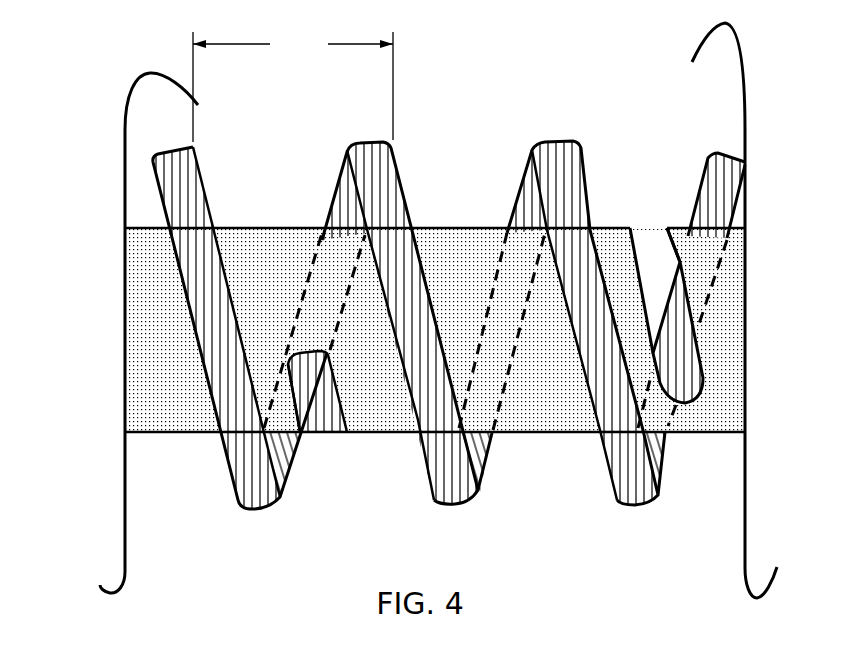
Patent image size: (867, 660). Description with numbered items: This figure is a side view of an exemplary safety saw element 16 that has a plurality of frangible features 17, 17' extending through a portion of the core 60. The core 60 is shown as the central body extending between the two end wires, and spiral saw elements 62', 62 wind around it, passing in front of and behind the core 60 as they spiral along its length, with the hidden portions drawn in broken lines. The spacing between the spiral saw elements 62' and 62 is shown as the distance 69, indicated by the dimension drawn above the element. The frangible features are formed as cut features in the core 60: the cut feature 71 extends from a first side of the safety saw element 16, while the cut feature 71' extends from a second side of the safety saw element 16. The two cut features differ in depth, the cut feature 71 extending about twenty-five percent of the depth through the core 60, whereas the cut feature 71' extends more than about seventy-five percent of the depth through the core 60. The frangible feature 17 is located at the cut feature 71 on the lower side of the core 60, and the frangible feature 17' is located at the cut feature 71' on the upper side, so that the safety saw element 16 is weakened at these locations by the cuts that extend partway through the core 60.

The distance 69 is at (293, 87).
The spiral saw element 62 is at (388, 302).
The spiral saw element 62' is at (240, 357).
The safety saw element 16 is at (533, 150).
The core 60 is at (488, 228).
The frangible feature 17 is at (317, 427).
The cut feature 71 is at (331, 369).
The frangible feature 17' is at (654, 280).
The cut feature 71' is at (657, 255).